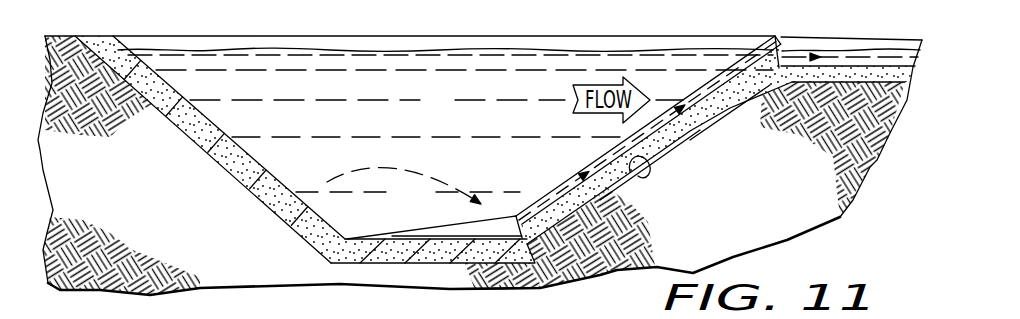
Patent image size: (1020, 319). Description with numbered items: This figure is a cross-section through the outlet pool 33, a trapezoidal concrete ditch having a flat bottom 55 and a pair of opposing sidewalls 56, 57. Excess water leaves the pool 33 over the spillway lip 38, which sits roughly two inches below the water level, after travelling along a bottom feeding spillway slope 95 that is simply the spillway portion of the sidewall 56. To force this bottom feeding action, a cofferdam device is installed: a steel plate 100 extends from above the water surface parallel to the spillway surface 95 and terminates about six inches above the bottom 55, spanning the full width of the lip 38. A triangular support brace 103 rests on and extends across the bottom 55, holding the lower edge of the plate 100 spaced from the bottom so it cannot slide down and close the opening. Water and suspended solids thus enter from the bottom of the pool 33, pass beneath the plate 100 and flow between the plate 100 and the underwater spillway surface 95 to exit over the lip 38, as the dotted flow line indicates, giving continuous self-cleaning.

The outlet pool 33 is at (448, 107).
The spillway lip 38 is at (793, 68).
The flat bottom 55 is at (410, 254).
The sidewall 56 is at (626, 197).
The sidewall 57 is at (260, 203).
The spillway slope 95 is at (648, 176).
The steel plate 100 is at (560, 186).
The triangular support brace 103 is at (443, 236).